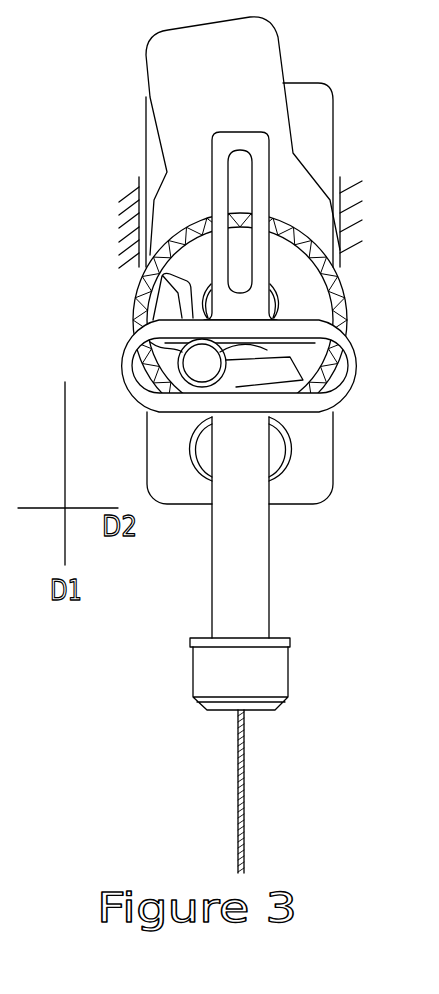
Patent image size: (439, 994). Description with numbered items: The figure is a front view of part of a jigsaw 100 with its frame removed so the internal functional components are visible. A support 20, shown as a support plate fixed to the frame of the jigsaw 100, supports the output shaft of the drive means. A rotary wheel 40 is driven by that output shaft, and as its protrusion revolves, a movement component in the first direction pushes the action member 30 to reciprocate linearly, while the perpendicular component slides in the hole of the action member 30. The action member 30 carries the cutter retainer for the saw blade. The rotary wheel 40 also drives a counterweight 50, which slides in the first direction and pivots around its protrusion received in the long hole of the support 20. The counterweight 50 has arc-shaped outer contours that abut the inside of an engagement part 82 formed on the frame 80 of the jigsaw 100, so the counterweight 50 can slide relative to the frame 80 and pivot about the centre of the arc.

The jigsaw 100 is at (123, 118).
The support 20 is at (313, 468).
The action member 30 is at (255, 612).
The rotary wheel 40 is at (303, 263).
The counterweight 50 is at (263, 90).
The frame 80 is at (352, 200).
The engagement part 82 is at (138, 195).